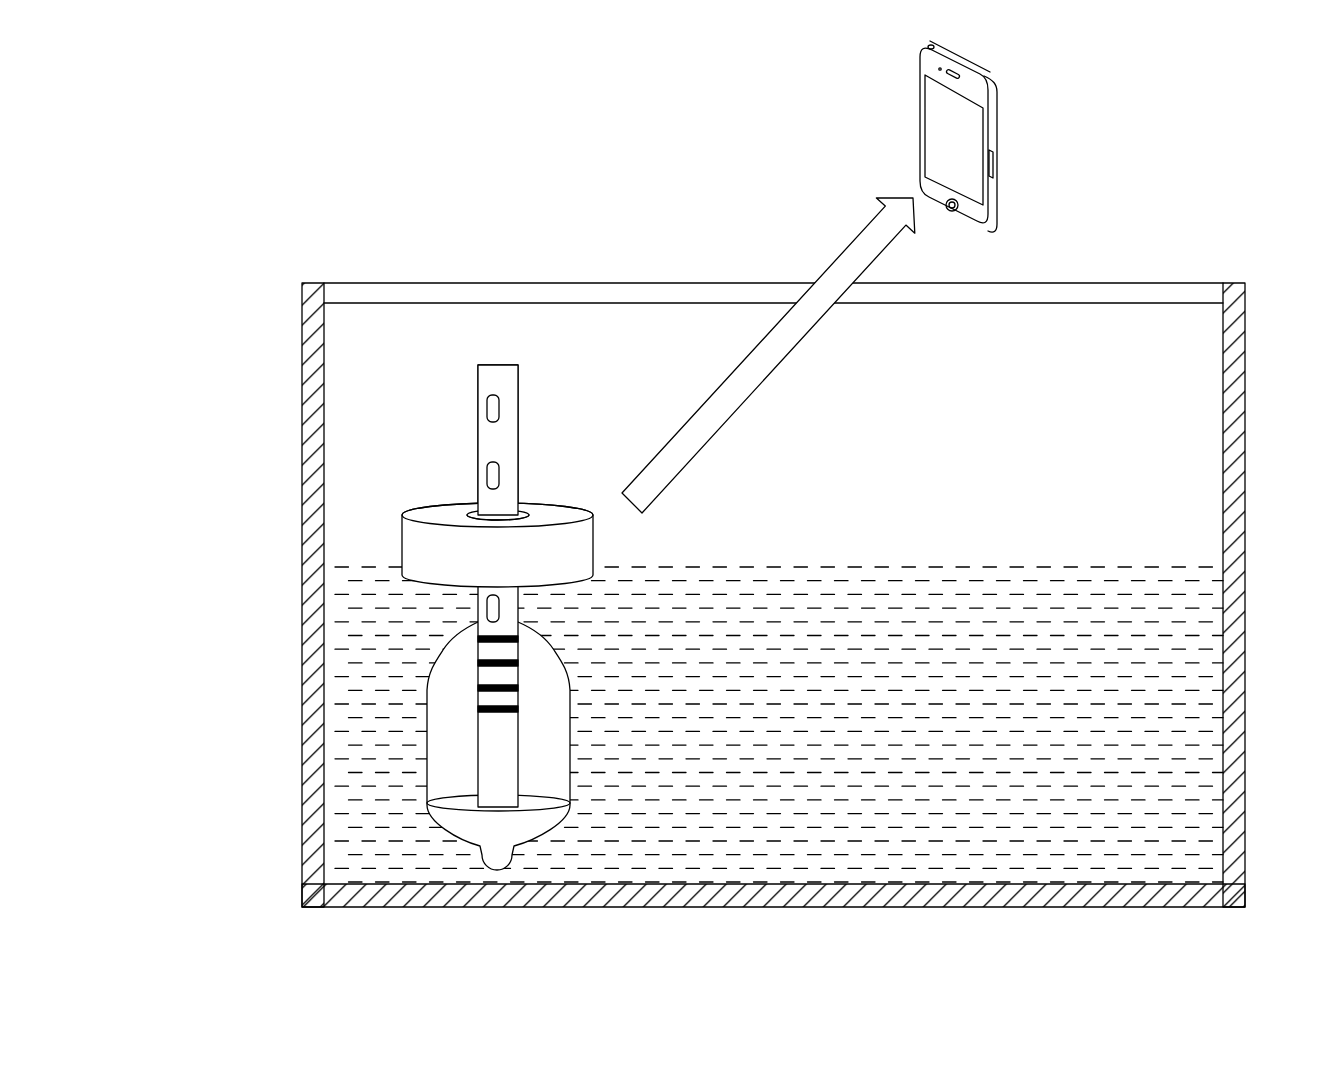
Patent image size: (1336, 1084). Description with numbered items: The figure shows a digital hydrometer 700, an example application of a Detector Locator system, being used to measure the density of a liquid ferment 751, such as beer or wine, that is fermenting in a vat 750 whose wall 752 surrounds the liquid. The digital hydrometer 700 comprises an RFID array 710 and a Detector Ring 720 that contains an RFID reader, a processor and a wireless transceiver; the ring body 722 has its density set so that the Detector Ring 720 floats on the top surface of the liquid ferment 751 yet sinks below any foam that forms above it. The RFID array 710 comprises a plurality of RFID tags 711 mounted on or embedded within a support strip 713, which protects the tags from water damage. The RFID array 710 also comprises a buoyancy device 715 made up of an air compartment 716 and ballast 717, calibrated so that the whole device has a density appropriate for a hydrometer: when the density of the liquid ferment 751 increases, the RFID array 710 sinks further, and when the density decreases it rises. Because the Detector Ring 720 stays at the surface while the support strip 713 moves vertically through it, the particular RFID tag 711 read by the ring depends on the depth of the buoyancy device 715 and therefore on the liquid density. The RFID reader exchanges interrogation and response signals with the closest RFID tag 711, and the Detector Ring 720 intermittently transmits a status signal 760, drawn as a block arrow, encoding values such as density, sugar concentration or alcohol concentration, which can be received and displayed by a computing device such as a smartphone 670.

The digital hydrometer 700 is at (290, 200).
The mobile device 670 is at (997, 117).
The RFID array 710 is at (462, 369).
The RFID tag 711 is at (502, 405).
The support strip 713 is at (477, 413).
The buoyancy device 715 is at (427, 740).
The air compartment 716 is at (457, 773).
The ballast 717 is at (470, 823).
The Detector Ring 720 is at (558, 517).
The float body 722 is at (402, 533).
The vat 750 is at (300, 460).
The liquid ferment 751 is at (963, 567).
The container wall 752 is at (300, 655).
The status signal 760 is at (725, 381).